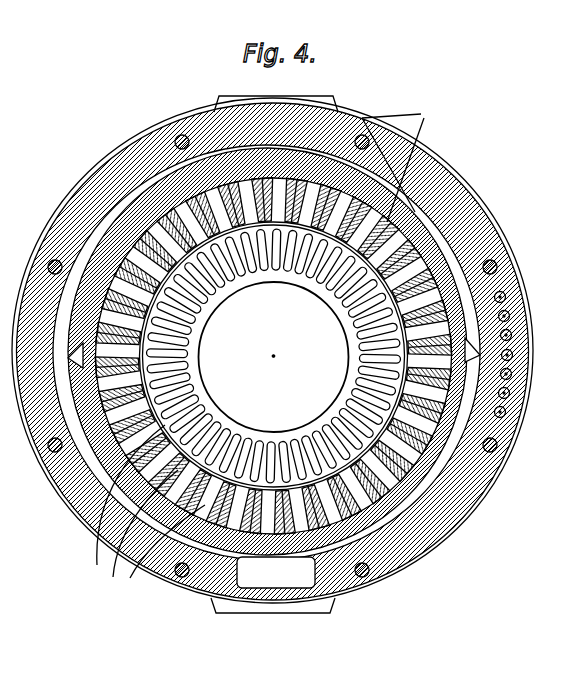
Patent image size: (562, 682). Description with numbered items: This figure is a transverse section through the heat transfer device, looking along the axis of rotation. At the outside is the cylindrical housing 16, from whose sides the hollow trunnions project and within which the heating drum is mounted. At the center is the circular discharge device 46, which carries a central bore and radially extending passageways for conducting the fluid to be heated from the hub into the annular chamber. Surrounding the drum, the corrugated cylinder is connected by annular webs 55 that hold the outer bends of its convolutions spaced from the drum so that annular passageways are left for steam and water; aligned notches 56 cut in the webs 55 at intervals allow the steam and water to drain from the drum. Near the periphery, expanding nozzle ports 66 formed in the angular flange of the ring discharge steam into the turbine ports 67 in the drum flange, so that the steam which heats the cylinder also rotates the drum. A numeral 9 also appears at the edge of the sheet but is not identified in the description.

The cylindrical housing 16 is at (468, 478).
The circular discharge device 46 is at (274, 357).
The annular webs 55 is at (273, 356).
The aligned notches 56 is at (273, 356).
The expanding nozzle ports 66 is at (362, 202).
The turbine ports 67 is at (268, 350).
The frame bolts 9 is at (5, 348).